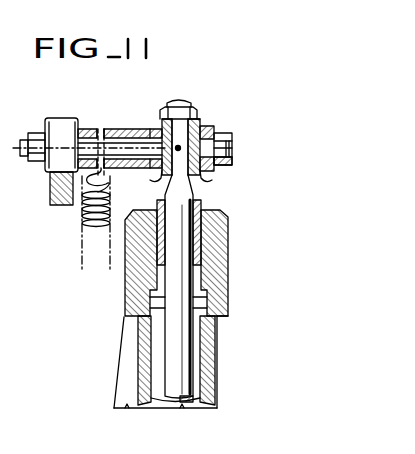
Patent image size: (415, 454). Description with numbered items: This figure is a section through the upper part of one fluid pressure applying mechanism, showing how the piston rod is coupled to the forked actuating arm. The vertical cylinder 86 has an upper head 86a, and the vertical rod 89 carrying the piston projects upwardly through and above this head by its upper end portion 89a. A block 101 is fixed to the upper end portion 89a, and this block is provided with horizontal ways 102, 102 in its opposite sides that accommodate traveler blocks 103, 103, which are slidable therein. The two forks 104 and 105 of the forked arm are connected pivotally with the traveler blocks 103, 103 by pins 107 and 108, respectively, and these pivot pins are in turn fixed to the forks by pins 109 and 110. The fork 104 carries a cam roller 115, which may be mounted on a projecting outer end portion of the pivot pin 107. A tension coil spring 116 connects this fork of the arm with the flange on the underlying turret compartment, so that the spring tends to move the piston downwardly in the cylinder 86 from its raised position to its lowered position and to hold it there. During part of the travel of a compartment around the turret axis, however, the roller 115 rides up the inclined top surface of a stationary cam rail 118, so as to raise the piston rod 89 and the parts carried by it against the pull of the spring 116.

The vertical cylinder 86 is at (146, 392).
The upper head 86a is at (130, 275).
The vertical rod 89 is at (168, 351).
The upper end portion 89a is at (184, 101).
The block 101 is at (200, 128).
The horizontal ways 102 is at (146, 129).
The traveler blocks 103 is at (156, 181).
The fork 104 is at (120, 129).
The fork 105 is at (233, 138).
The pin 107 is at (54, 168).
The pin 108 is at (233, 152).
The pin 109 is at (104, 129).
The pin 110 is at (233, 163).
The cam roller 115 is at (62, 118).
The tension coil spring 116 is at (92, 222).
The stationary cam rail 118 is at (52, 191).